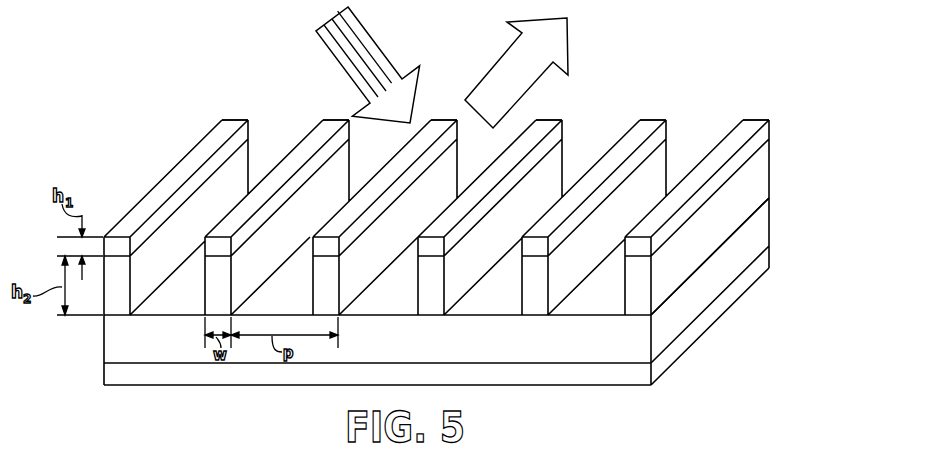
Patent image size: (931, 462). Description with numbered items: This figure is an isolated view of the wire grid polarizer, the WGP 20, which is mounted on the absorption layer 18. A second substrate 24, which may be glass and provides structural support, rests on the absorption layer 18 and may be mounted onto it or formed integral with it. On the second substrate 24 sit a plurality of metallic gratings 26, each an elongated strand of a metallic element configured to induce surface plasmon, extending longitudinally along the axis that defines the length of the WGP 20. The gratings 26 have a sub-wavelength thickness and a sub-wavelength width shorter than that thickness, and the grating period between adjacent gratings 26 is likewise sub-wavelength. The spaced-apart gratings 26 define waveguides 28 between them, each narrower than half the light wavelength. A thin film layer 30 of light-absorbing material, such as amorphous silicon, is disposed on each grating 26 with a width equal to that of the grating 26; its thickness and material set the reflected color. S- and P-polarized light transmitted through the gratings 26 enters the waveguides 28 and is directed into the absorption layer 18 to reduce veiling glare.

The absorption layer 18 is at (753, 273).
The WGP 20 is at (459, 195).
The second substrate 24 is at (762, 238).
The metallic gratings 26 is at (762, 175).
The waveguides 28 is at (278, 138).
The thin film layer 30 is at (235, 125).